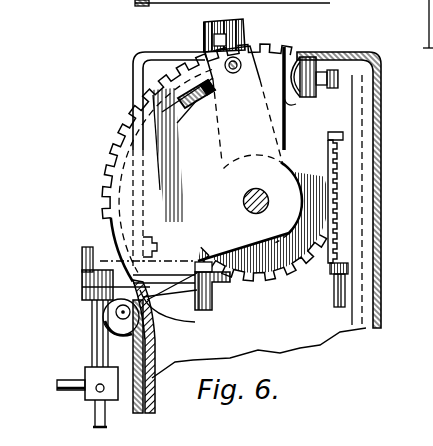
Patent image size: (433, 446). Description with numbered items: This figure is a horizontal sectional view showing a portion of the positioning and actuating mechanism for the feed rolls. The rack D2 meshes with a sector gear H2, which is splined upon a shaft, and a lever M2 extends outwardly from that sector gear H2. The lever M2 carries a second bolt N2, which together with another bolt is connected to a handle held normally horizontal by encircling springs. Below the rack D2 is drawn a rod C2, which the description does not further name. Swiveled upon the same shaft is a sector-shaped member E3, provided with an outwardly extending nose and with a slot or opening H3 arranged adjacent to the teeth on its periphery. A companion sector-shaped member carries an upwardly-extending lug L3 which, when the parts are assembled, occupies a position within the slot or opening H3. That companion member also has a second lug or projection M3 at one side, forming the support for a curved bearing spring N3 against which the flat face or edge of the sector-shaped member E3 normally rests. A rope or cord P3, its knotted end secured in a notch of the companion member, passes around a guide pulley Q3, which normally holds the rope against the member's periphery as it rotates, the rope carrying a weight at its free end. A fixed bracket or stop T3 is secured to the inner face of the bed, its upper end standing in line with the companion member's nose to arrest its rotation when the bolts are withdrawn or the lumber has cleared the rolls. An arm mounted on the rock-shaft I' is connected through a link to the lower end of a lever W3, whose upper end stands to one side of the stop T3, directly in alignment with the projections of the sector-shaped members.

The second bolt N2 is at (203, 28).
The lever M2 is at (246, 26).
The second lug or projection M3 is at (322, 58).
The curved bearing spring N3 is at (290, 106).
The slot or opening H3 is at (160, 155).
The upwardly-extending lug L3 is at (196, 104).
The sector-shaped member E3 is at (250, 153).
The fixed bracket or stop T3 is at (203, 262).
The rack D2 is at (344, 213).
The rod C2 is at (347, 296).
The guide pulley Q3 is at (107, 313).
The rock-shaft I' is at (87, 363).
The rope or cord P3 is at (154, 411).
The lever W3 is at (181, 303).
The sector gear H2 is at (278, 268).